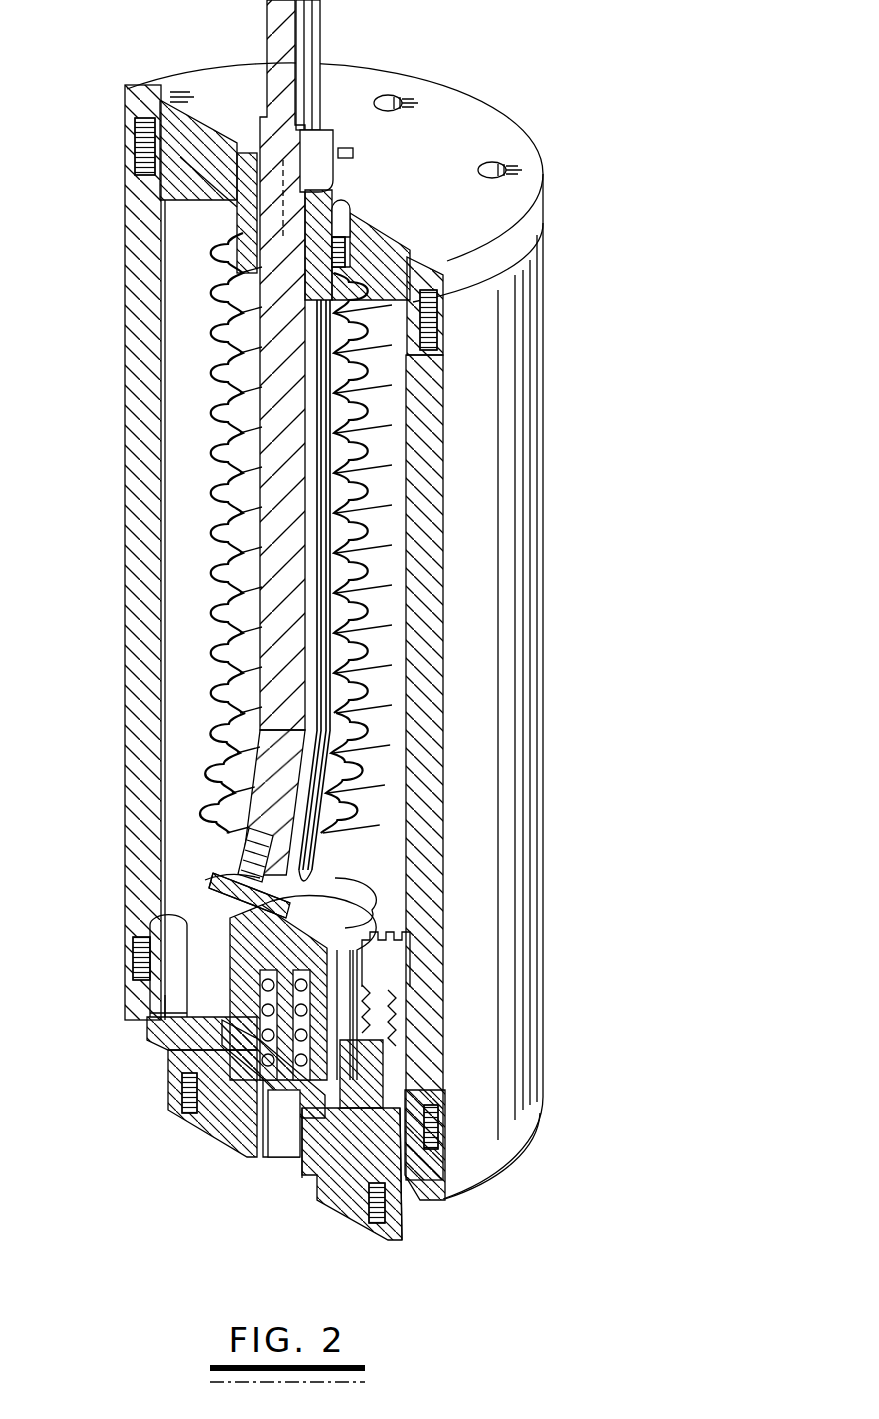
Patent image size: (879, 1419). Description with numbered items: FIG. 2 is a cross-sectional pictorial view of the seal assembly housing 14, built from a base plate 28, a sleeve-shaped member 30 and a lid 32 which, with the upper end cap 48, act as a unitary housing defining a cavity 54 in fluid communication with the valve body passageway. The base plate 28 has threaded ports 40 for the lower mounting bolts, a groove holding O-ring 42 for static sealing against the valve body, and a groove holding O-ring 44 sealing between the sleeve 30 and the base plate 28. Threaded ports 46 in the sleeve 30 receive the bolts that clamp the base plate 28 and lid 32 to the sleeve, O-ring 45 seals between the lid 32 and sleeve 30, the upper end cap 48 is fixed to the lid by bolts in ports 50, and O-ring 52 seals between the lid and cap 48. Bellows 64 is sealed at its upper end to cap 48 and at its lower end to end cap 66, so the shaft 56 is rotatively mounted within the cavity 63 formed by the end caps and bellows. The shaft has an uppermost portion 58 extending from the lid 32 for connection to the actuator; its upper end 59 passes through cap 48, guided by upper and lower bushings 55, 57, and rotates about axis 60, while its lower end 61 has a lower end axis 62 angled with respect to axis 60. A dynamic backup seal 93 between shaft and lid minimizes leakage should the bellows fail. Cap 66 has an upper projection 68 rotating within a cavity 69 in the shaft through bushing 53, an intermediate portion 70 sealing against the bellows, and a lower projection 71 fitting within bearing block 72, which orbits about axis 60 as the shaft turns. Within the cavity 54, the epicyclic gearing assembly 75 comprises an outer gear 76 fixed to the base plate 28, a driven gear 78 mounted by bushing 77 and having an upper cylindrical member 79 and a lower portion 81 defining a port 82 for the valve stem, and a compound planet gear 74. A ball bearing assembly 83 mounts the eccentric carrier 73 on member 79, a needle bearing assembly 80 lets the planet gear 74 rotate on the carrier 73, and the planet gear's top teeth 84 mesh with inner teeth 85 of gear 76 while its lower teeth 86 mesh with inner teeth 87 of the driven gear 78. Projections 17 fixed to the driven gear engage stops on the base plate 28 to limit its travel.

The seal assembly housing 14 is at (551, 711).
The projections 17 is at (150, 1060).
The base plate 28 is at (165, 1085).
The sleeve-shaped member 30 is at (552, 345).
The top plate 32 is at (458, 117).
The threaded ports 40 is at (377, 1222).
The O-ring 42 is at (213, 1130).
The O-ring 44 is at (135, 976).
The O-ring 45 is at (437, 333).
The threaded ports 46 is at (158, 160).
The upper end cap 48 is at (215, 200).
The ports 50 is at (378, 266).
The static O-ring 52 is at (205, 165).
The bushing 53 is at (250, 840).
The cavity 54 is at (170, 434).
The upper bushing 55 is at (333, 157).
The shaft 56 is at (320, 480).
The lower bushing 57 is at (238, 265).
The uppermost portion 58 is at (305, 38).
The upper end 59 is at (228, 215).
The axis 60 is at (288, 190).
The lower end 61 is at (255, 800).
The lower end axis 62 is at (282, 765).
The cavity 63 is at (337, 528).
The bellows 64 is at (410, 590).
The end cap 66 is at (226, 876).
The upper projection 68 is at (232, 866).
The cavity 69 is at (300, 842).
The intermediate portion 70 is at (362, 905).
The lower projection 71 is at (236, 905).
The bearing block 72 is at (232, 893).
The eccentric carrier 73 is at (340, 930).
The compound planet gear 74 is at (385, 992).
The epicyclic gearing assembly 75 is at (485, 1114).
The outer gear 76 is at (368, 906).
The bushing 77 is at (255, 1127).
The driven gear 78 is at (400, 1182).
The upper cylindrical member 79 is at (302, 1175).
The needle bearing assembly 80 is at (155, 1015).
The lower portion 81 is at (270, 1150).
The port 82 is at (288, 1128).
The ball bearing assembly 83 is at (160, 950).
The top set of outer gear teeth 84 is at (388, 1022).
The inner teeth 85 is at (378, 960).
The lower set of outer gear teeth 86 is at (345, 1180).
The inner teeth 87 is at (380, 1058).
The dynamic backup seal 93 is at (352, 230).